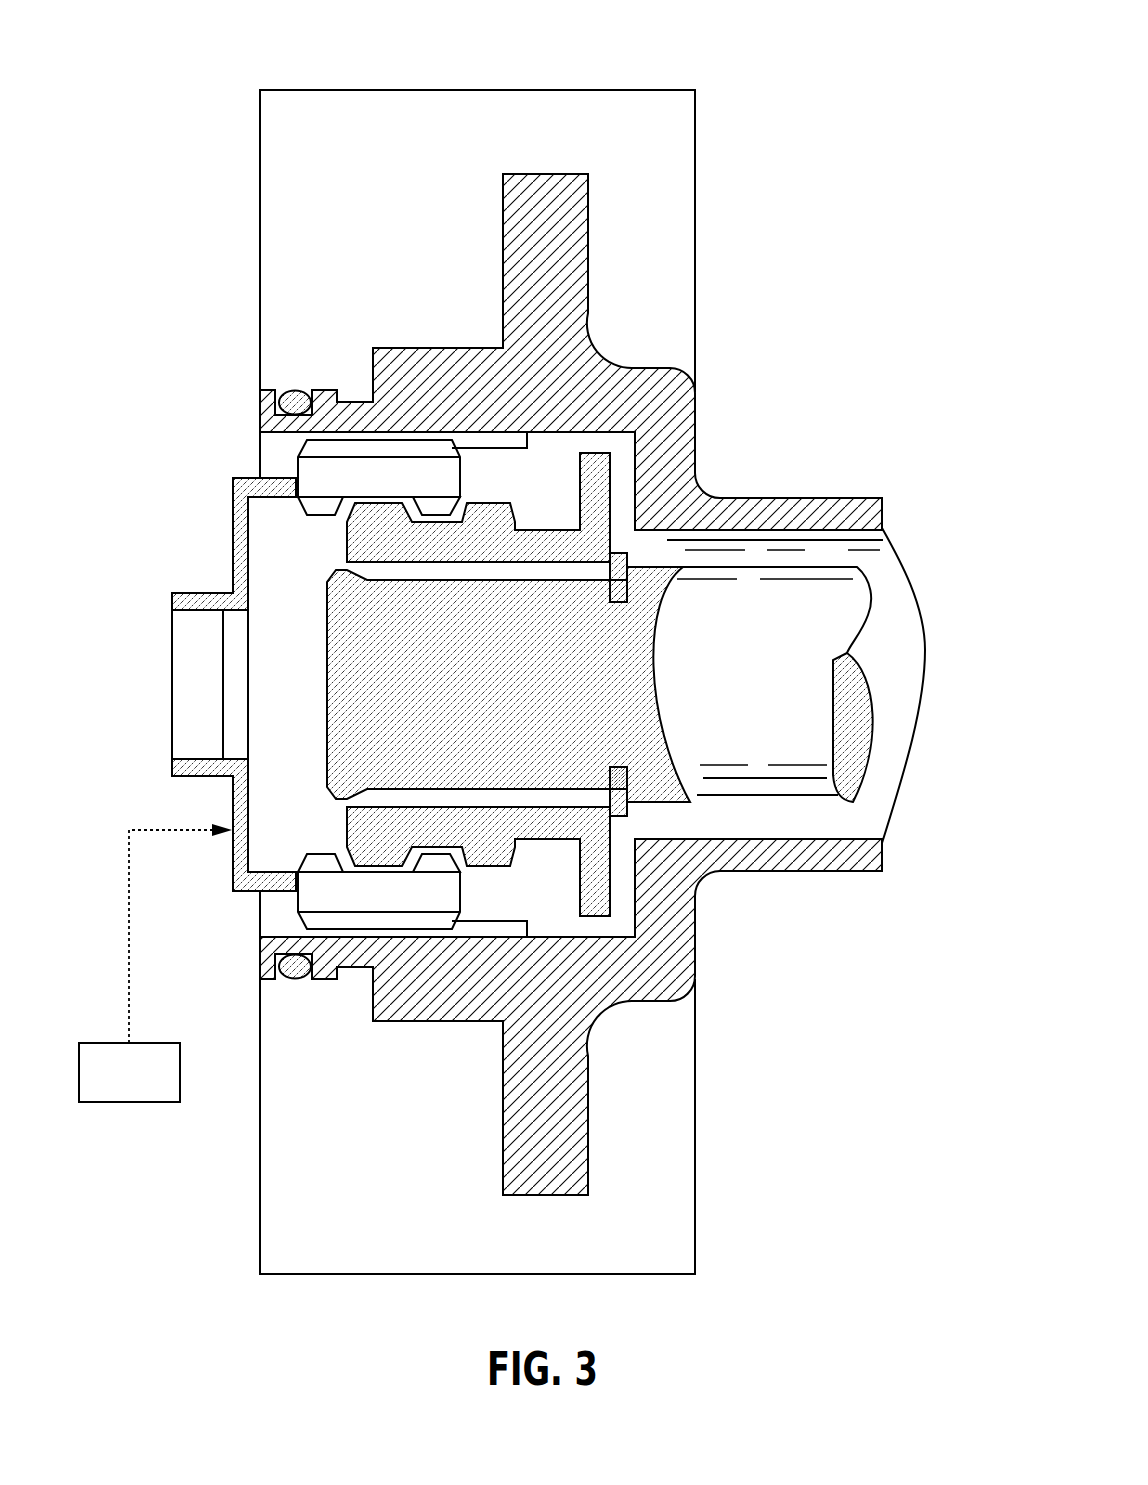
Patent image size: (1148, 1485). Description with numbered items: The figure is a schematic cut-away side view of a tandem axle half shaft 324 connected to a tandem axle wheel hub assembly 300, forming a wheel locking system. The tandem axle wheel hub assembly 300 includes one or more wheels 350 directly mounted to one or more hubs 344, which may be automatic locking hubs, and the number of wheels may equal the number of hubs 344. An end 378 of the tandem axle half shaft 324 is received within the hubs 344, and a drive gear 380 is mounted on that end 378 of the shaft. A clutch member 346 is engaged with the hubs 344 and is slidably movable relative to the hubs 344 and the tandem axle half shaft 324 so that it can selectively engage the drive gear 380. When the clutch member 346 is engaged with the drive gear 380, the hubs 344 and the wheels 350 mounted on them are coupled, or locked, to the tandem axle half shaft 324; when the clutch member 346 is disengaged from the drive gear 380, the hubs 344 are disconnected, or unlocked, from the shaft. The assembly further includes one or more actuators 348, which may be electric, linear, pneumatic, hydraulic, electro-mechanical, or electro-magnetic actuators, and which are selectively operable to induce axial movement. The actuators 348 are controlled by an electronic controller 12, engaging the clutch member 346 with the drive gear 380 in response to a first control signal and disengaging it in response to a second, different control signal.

The tandem axle wheel hub assembly 300 is at (848, 37).
The wheel 350 is at (695, 163).
The hub 344 is at (588, 287).
The clutch member 346 is at (392, 475).
The drive gear 380 is at (347, 542).
The end of the tandem axle half shaft 378 is at (325, 670).
The actuator 348 is at (248, 822).
The tandem axle half shaft 324 is at (780, 691).
The controller 12 is at (141, 1084).